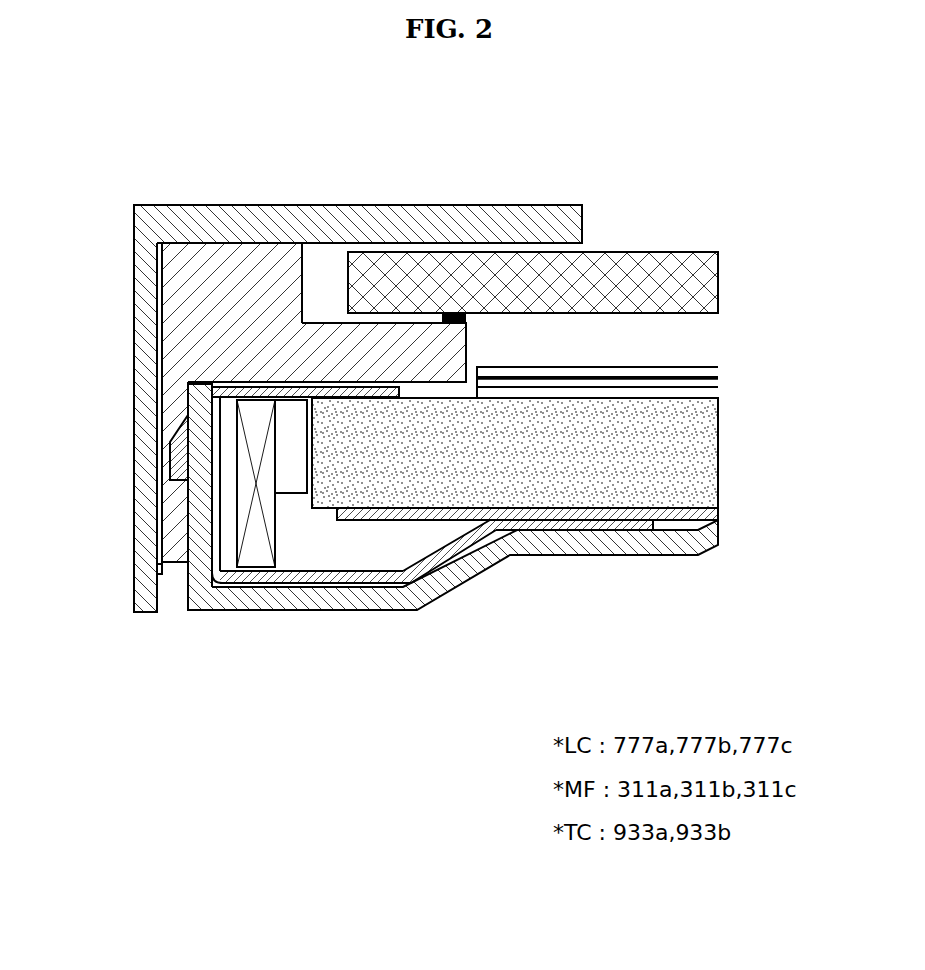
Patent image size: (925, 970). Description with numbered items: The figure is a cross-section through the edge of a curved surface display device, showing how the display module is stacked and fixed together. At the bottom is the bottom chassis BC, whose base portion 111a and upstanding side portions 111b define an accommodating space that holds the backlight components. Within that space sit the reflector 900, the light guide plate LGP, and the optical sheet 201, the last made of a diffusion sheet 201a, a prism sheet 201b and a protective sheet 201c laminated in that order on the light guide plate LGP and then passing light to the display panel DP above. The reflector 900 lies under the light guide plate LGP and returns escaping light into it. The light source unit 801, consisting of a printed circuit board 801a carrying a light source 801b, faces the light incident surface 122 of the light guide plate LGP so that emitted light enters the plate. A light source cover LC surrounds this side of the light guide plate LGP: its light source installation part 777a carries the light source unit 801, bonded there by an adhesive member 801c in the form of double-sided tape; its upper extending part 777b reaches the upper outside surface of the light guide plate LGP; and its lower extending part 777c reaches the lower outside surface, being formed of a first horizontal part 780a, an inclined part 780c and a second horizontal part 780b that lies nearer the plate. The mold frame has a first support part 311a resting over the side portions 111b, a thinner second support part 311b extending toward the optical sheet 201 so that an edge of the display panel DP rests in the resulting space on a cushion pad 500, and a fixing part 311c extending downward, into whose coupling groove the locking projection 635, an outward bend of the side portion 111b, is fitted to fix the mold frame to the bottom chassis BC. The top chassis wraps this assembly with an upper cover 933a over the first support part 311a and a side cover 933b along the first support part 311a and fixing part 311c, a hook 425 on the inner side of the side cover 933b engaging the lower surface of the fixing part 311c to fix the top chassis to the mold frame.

The upper cover 933a is at (433, 222).
The side cover 933b is at (148, 308).
The first support part 311a is at (222, 302).
The second support part 311b is at (332, 342).
The fixing part 311c is at (158, 414).
The locking projection 635 is at (170, 467).
The hook 425 is at (158, 573).
The light source installation part 777a is at (214, 518).
The upper extending part 777b is at (250, 390).
The lower extending part 777c is at (385, 660).
The light source unit 801 is at (362, 693).
The printed circuit board 801a is at (267, 557).
The light source 801b is at (290, 480).
The adhesive member 801c is at (237, 557).
The first horizontal part 780a is at (383, 578).
The second horizontal part 780b is at (626, 530).
The inclined part 780c is at (482, 557).
The light guide plate LGP is at (705, 472).
The light incident surface 122 is at (318, 463).
The reflector 900 is at (700, 512).
The optical sheet 201 is at (822, 343).
The diffusion sheet 201a is at (710, 392).
The prism sheet 201b is at (710, 381).
The protective sheet 201c is at (708, 372).
The display panel DP is at (708, 275).
The cushion pad 500 is at (468, 317).
The base portion 111a is at (223, 598).
The side portions 111b is at (187, 572).
The bottom chassis BC is at (108, 698).